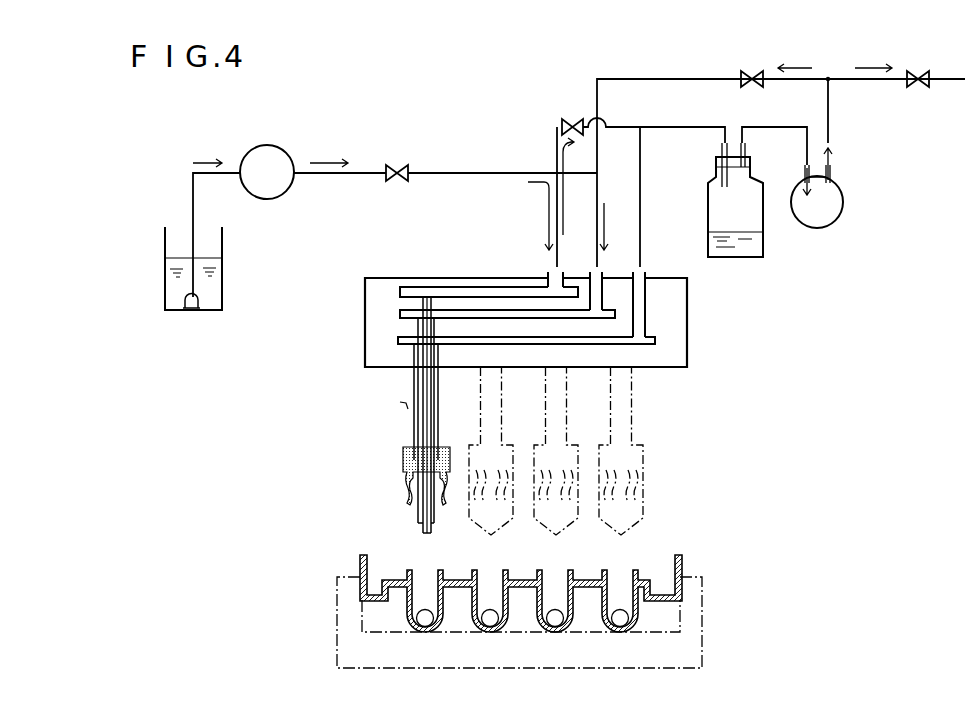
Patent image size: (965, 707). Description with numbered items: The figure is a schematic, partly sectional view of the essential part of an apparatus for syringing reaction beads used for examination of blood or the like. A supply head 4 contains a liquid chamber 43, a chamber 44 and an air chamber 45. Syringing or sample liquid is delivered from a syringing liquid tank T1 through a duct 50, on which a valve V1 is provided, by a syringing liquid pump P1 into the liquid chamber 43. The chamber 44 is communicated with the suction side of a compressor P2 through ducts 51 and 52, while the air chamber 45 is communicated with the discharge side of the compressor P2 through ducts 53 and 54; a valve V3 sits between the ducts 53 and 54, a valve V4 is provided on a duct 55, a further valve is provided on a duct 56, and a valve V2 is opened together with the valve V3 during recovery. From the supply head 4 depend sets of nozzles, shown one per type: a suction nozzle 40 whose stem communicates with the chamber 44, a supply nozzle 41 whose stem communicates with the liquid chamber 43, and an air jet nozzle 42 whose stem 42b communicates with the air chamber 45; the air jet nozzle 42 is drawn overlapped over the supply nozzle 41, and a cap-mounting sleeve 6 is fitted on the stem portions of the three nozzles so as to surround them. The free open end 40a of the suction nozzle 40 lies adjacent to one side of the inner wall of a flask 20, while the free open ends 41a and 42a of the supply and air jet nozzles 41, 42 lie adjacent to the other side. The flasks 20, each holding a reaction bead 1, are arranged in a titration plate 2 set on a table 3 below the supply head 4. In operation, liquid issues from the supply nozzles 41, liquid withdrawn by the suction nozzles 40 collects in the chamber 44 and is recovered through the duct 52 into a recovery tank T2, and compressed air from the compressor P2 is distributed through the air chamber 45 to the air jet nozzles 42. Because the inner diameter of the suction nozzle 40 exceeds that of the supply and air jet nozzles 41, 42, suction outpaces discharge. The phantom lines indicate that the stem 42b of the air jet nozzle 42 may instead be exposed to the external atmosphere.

The duct 54 is at (665, 76).
The valve V3 is at (750, 68).
The valve V4 is at (916, 67).
The valve V2 is at (573, 117).
The duct 56 is at (625, 125).
The duct 55 is at (875, 82).
The duct 53 is at (828, 112).
The duct 52 is at (641, 141).
The duct 51 is at (793, 125).
The duct 50 is at (557, 198).
The syringing liquid pump P1 is at (253, 196).
The valve V1 is at (394, 184).
The syringing liquid tank T1 is at (210, 303).
The compressor P2 is at (832, 207).
The recovery tank T2 is at (755, 242).
The liquid chamber 43 is at (445, 292).
The supply head 4 is at (365, 333).
The chamber 44 is at (617, 340).
The air chamber 45 is at (580, 319).
The suction nozzle 40 is at (436, 356).
The supply nozzle 41 is at (415, 382).
The air jet nozzle 42 is at (417, 390).
The cap-mounting sleeve 6 is at (438, 397).
The stem of air jet nozzle 42b is at (410, 412).
The free open end of supply nozzle 41a is at (420, 526).
The free open end of air jet nozzle 42a is at (422, 532).
The free open end of suction nozzle 40a is at (430, 527).
The titration plate 2 is at (352, 592).
The flask 20 is at (407, 610).
The reaction bead 1 is at (425, 620).
The table 3 is at (703, 620).